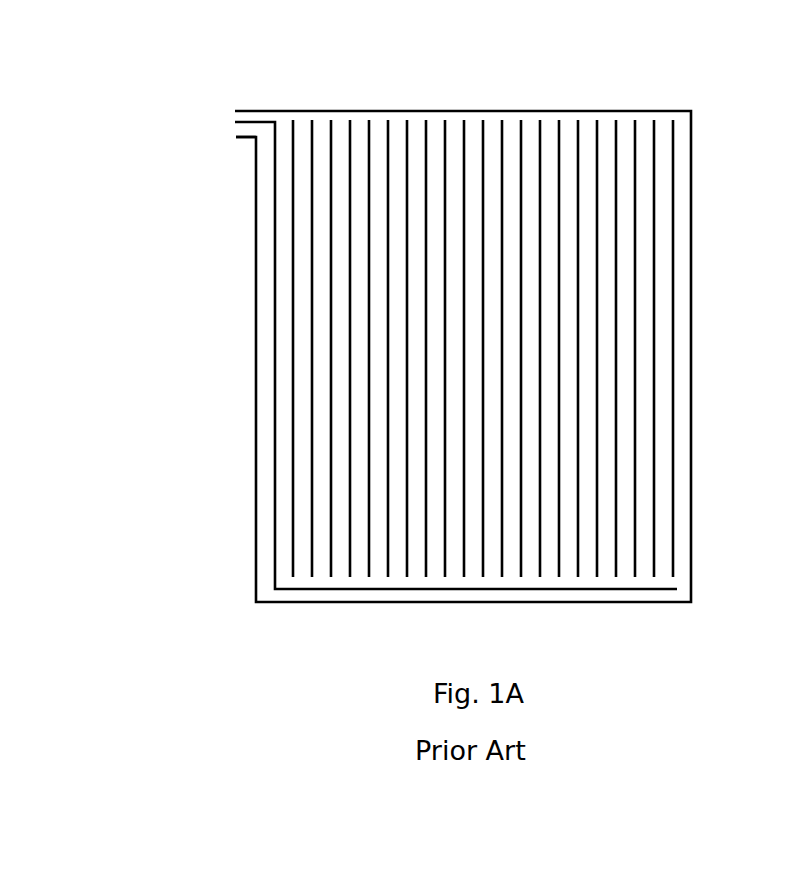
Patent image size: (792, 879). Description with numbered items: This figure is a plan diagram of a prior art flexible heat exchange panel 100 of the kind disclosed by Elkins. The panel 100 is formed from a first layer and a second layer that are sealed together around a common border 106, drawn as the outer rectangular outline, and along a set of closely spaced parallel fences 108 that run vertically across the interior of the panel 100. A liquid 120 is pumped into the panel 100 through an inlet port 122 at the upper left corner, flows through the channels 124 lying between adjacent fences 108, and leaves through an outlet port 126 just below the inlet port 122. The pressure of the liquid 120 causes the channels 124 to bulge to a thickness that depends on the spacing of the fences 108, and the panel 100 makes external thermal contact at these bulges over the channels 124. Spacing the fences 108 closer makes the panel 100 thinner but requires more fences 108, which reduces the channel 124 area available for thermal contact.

The heat exchange panel 100 is at (728, 607).
The common border 106 is at (694, 132).
The fences 108 is at (633, 232).
The liquid 120 is at (265, 368).
The inlet port 122 is at (235, 113).
The channels 124 is at (639, 316).
The outlet port 126 is at (236, 132).